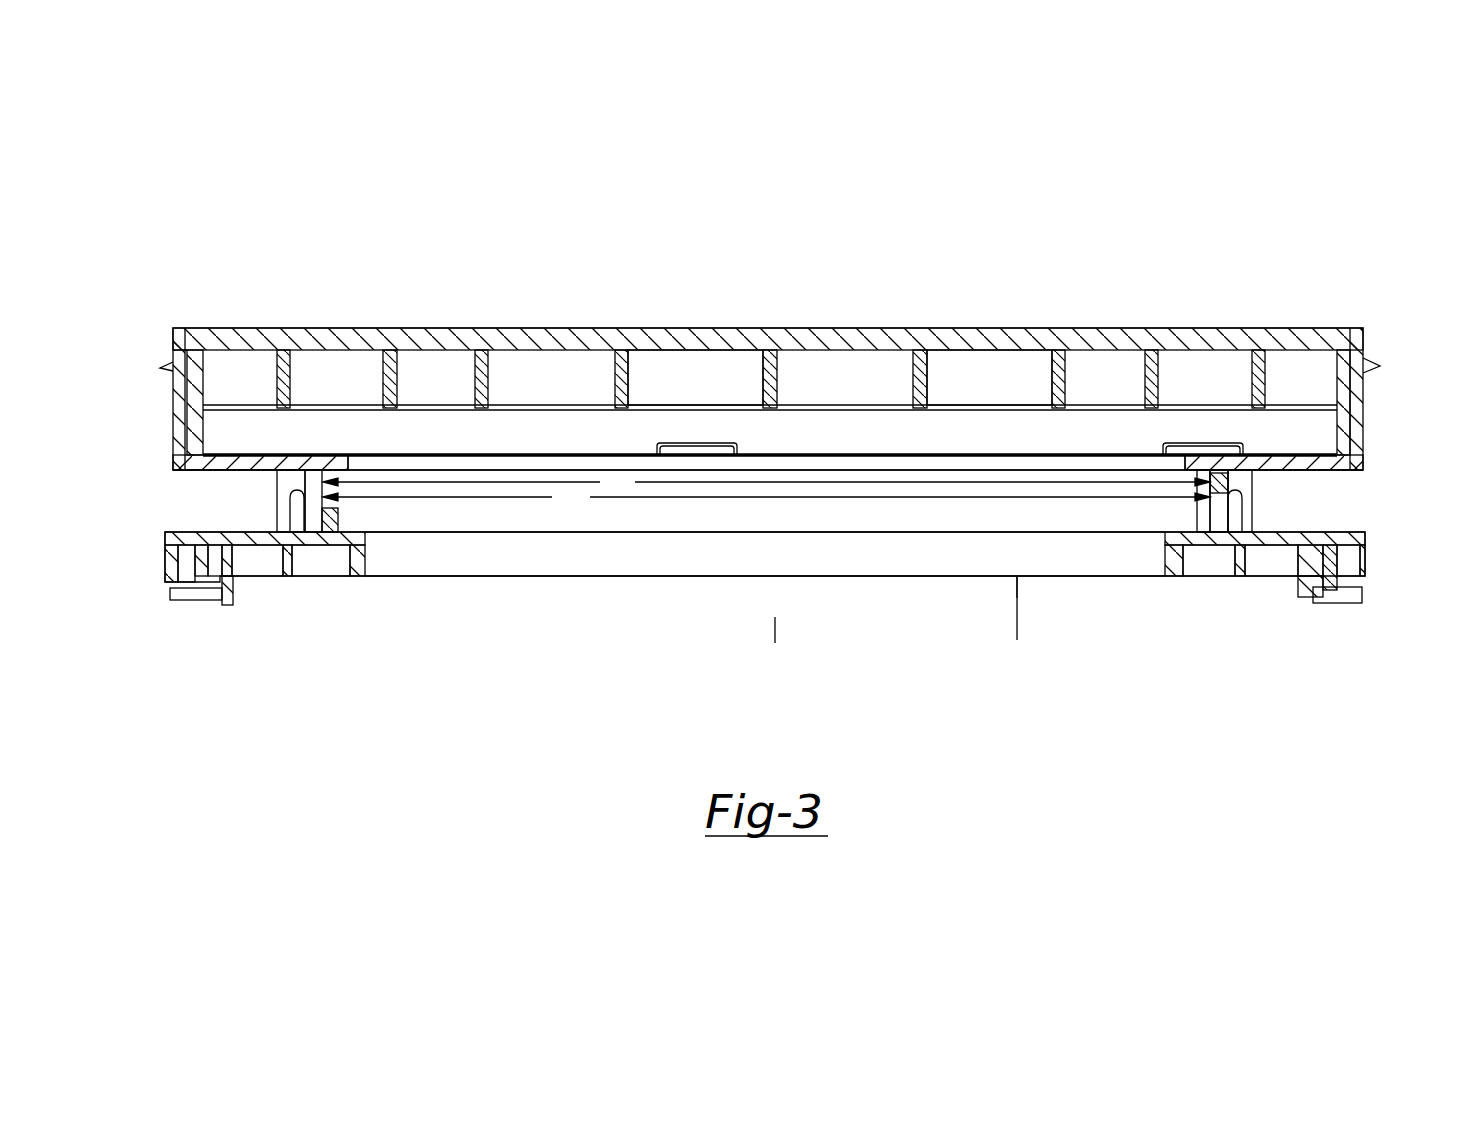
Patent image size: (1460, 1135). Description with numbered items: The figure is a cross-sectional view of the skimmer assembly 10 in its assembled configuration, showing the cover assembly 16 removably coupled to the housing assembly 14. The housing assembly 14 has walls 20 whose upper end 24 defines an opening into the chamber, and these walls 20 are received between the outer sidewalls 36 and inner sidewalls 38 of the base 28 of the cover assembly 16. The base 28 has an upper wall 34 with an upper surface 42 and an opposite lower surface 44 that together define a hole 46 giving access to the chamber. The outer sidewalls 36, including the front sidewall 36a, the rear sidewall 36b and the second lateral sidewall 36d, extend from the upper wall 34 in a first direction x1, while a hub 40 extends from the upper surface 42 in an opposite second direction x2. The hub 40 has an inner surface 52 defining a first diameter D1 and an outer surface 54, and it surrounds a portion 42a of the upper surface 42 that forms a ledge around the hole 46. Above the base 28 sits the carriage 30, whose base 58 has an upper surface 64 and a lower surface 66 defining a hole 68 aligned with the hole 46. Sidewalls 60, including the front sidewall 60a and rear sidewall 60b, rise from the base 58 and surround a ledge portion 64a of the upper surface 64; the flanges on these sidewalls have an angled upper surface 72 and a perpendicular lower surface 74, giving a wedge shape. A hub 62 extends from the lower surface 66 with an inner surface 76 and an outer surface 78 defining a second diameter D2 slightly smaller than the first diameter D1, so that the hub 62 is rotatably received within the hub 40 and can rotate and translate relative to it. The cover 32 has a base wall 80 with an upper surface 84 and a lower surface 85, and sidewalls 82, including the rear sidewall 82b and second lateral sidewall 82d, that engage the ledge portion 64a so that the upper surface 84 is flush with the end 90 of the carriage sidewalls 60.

The skimmer assembly 10 is at (1368, 220).
The housing assembly 14 is at (210, 604).
The cover assembly 16 is at (130, 347).
The walls 20 is at (228, 598).
The upper end 24 is at (217, 548).
The base 28 is at (1359, 522).
The carriage 30 is at (1370, 402).
The cover 32 is at (1337, 327).
The upper wall 34 is at (1340, 540).
The outer sidewalls 36 is at (767, 609).
The front sidewall 36a is at (175, 556).
The rear sidewall 36b is at (1367, 568).
The second lateral sidewall 36d is at (580, 560).
The inner sidewalls 38 is at (230, 555).
The hub 40 is at (1218, 483).
The upper surface 42 is at (1300, 540).
The portion of the upper surface 42a is at (1177, 532).
The lower surface 44 is at (1343, 580).
The hole 46 is at (845, 568).
The inner surface 52 is at (345, 510).
The outer surface 54 is at (290, 488).
The base 58 is at (462, 470).
The sidewalls 60 is at (720, 402).
The front sidewall 60a is at (185, 420).
The rear sidewall 60b is at (1358, 388).
The hub 62 is at (1200, 513).
The upper surface 64 is at (500, 478).
The portion of the upper surface 64a is at (1333, 452).
The lower surface 66 is at (490, 478).
The hole 68 is at (752, 460).
The upper surface 72 is at (165, 360).
The lower surface 74 is at (175, 388).
The inner surface 76 is at (305, 505).
The outer surface 78 is at (315, 493).
The base wall 80 is at (578, 340).
The sidewalls 82 is at (1036, 331).
The rear sidewall 82b is at (1382, 368).
The second lateral sidewall 82d is at (661, 366).
The upper surface 84 is at (835, 335).
The lower surface 85 is at (1000, 368).
The end 90 is at (182, 388).
The first diameter D1 is at (766, 483).
The second diameter D2 is at (766, 503).
The first direction x1 is at (775, 586).
The second direction x2 is at (1017, 597).